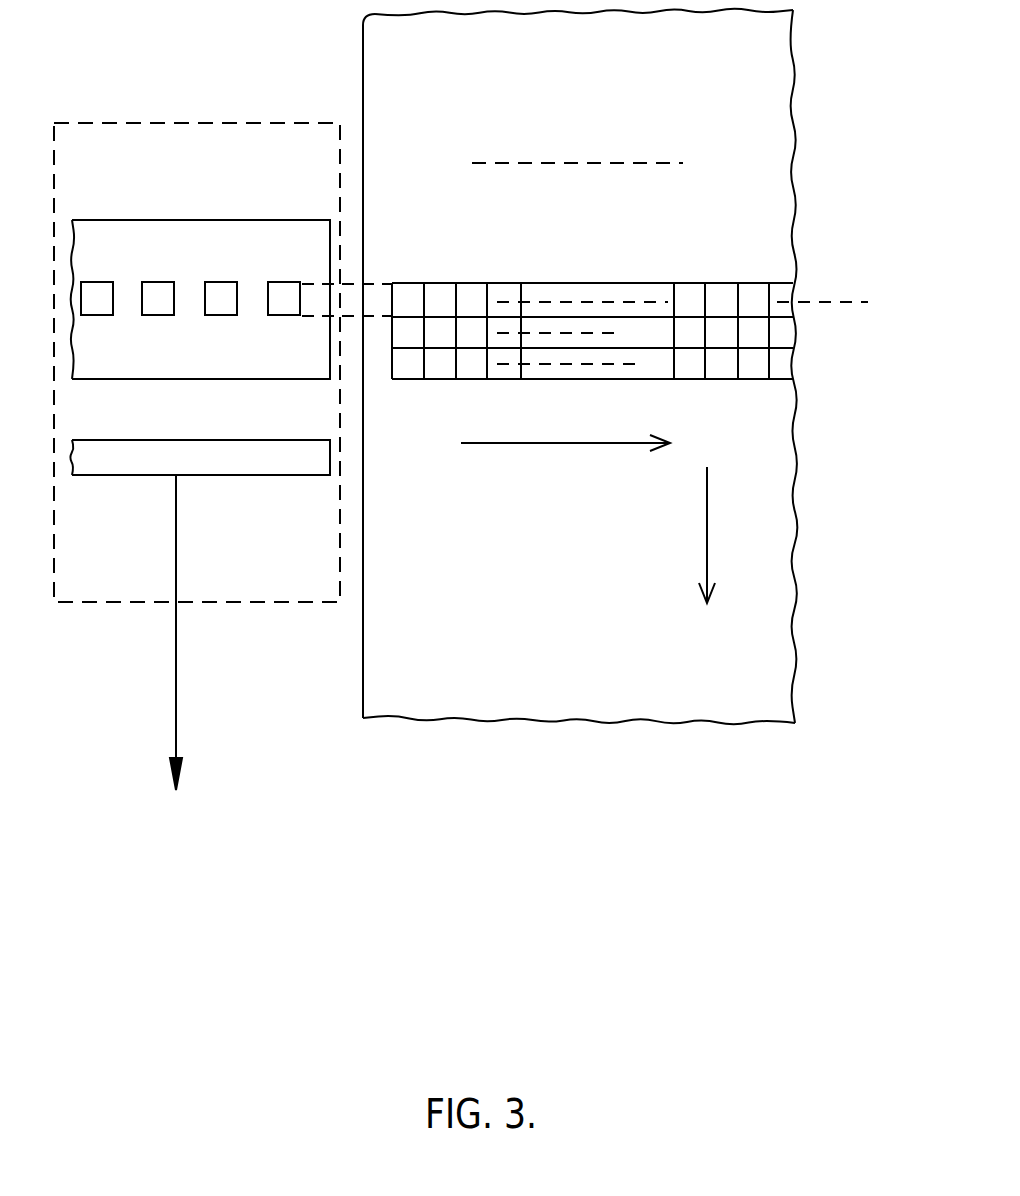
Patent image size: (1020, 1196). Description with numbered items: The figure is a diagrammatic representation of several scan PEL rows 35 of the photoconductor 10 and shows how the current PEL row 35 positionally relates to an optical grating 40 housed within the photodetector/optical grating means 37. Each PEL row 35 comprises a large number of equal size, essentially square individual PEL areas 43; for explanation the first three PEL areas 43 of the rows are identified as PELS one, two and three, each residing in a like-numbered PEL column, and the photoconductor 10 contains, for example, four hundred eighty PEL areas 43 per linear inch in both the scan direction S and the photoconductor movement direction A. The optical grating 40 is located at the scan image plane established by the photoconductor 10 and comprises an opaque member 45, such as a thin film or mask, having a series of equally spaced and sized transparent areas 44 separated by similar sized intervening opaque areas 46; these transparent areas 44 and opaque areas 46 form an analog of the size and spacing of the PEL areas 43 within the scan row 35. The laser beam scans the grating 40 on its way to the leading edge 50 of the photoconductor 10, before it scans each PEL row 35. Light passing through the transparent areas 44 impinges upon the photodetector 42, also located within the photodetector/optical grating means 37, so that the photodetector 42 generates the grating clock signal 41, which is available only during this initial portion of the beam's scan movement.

The photoconductor 10 is at (578, 366).
The PEL row 35 is at (846, 296).
The photodetector/optical grating means 37 is at (195, 105).
The optical grating 40 is at (200, 257).
The grating clock signal 41 is at (251, 632).
The photodetector 42 is at (280, 483).
The PEL areas 43 is at (410, 283).
The transparent areas 44 is at (158, 282).
The opaque member 45 is at (311, 361).
The opaque areas 46 is at (260, 307).
The leading edge 50 is at (363, 62).